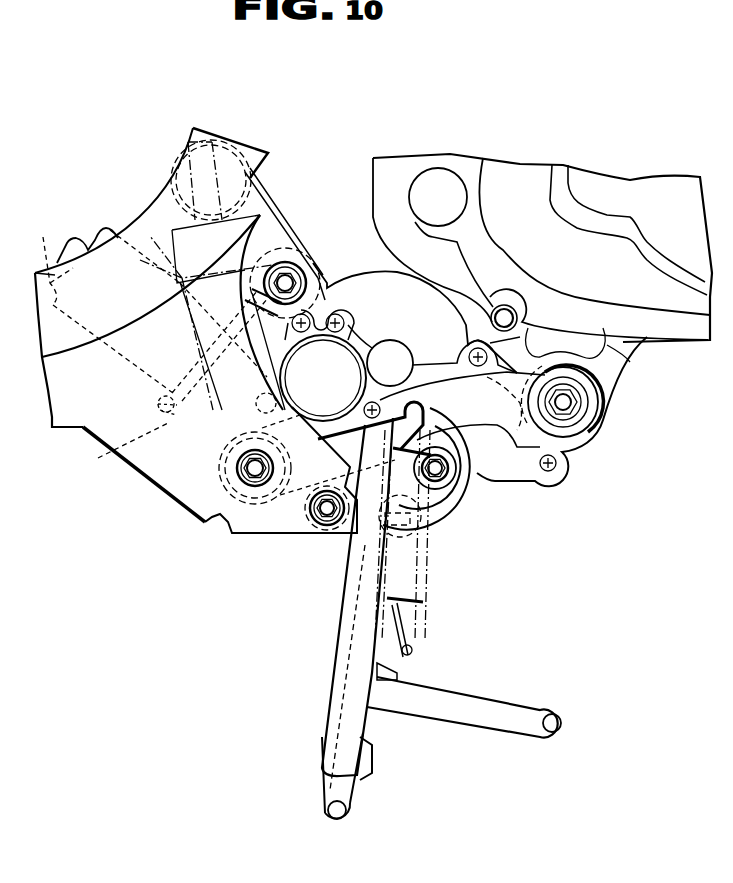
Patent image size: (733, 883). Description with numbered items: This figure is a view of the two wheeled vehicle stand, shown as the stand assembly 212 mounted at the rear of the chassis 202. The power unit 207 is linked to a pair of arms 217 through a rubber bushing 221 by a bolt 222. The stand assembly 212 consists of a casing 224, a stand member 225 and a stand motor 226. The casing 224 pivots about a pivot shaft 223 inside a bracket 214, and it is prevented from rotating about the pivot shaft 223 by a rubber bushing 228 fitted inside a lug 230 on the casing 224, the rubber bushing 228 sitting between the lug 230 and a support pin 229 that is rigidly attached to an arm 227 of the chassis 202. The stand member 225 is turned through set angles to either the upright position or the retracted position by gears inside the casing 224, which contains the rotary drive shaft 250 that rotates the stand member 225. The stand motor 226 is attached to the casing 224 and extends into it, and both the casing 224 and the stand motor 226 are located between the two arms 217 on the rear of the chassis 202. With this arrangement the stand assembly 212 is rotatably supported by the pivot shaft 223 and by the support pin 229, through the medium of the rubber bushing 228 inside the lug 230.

The chassis 202 is at (157, 210).
The power unit 207 is at (675, 333).
The stand assembly 212 is at (350, 581).
The bracket 214 is at (157, 472).
The arms 217 is at (282, 505).
The rubber bushing 221 is at (600, 403).
The bolt 222 is at (568, 406).
The pivot shaft 223 is at (327, 512).
The casing 224 is at (470, 510).
The stand member 225 is at (324, 738).
The stand motor 226 is at (168, 420).
The arm 227 is at (262, 200).
The rubber bushing 228 is at (280, 253).
The support pin 229 is at (287, 281).
The lug 230 is at (355, 266).
The rotary drive shaft 250 is at (445, 473).